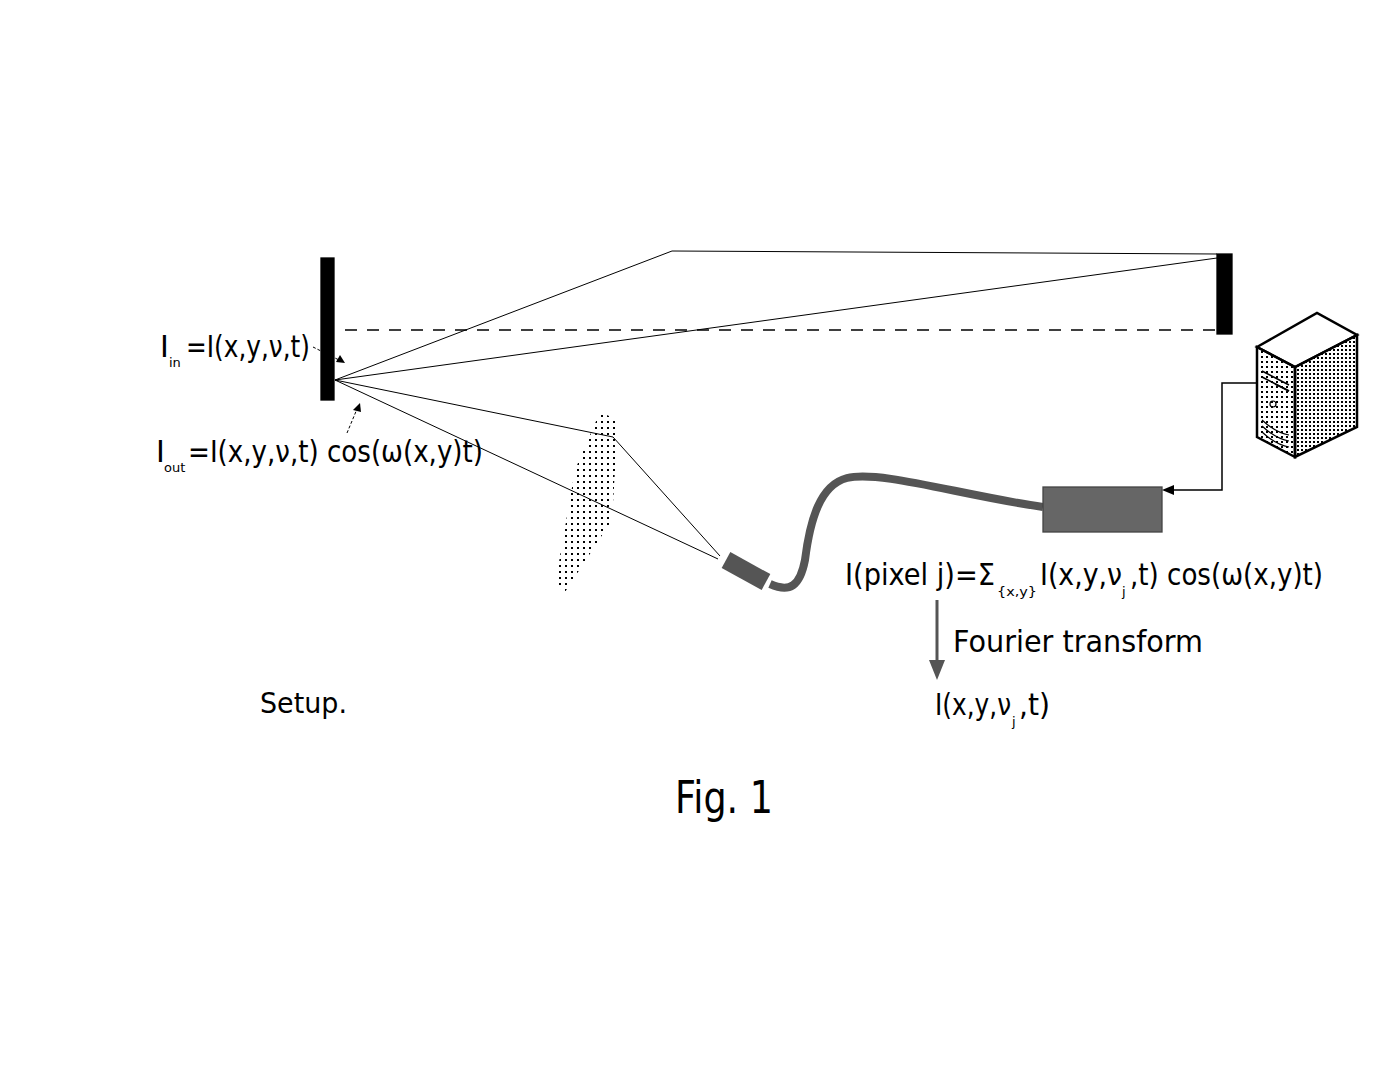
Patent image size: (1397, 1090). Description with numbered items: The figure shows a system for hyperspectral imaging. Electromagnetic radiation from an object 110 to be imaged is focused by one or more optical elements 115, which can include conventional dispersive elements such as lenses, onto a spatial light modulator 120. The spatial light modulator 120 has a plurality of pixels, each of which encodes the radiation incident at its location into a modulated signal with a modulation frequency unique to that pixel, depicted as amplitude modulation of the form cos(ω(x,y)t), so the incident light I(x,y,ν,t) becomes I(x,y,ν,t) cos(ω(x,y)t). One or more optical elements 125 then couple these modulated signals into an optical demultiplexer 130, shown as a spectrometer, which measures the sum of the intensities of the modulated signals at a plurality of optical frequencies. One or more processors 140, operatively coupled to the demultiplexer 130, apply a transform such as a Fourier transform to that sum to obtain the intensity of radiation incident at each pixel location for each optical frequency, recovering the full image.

The object 110 is at (1235, 292).
The optical elements 115 is at (670, 250).
The spatial light modulator 120 is at (320, 276).
The optical elements 125 is at (550, 537).
The optical demultiplexer 130 is at (1165, 507).
The processors 140 is at (1305, 308).